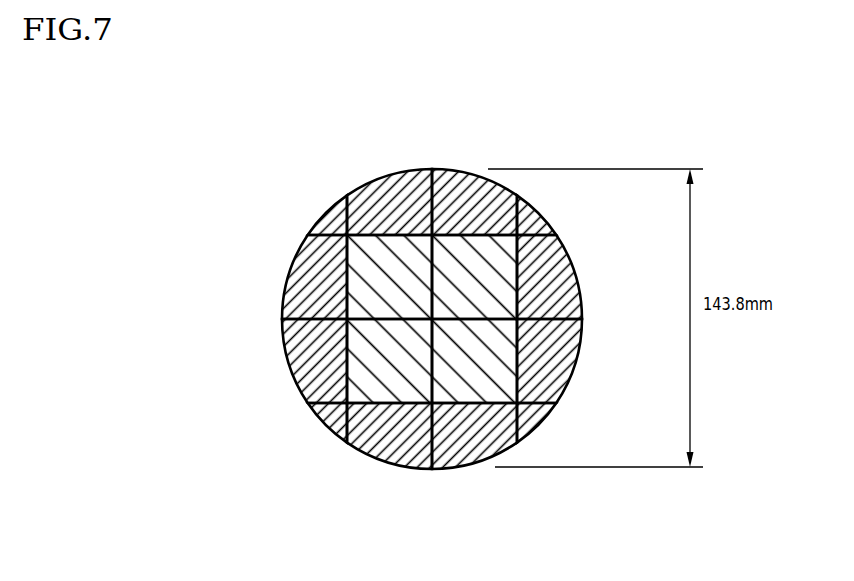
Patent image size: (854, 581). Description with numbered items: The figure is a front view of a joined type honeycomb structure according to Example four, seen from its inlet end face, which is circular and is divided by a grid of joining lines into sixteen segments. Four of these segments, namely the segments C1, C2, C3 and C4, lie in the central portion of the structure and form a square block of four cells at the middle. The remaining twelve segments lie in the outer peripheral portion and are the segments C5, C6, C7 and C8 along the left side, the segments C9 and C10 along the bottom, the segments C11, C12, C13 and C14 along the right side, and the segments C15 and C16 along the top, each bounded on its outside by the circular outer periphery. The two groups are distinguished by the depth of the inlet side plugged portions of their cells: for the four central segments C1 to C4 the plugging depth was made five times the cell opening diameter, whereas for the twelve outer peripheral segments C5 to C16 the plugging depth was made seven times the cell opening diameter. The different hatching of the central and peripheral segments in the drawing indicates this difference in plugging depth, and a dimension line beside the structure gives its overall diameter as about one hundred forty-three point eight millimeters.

The segment C1 is at (368, 257).
The segment C2 is at (448, 257).
The segment C3 is at (368, 380).
The segment C4 is at (455, 378).
The segment C5 is at (328, 218).
The segment C6 is at (298, 277).
The segment C7 is at (312, 358).
The segment C8 is at (319, 417).
The segment C9 is at (396, 450).
The segment C10 is at (476, 437).
The segment C11 is at (532, 415).
The segment C12 is at (557, 353).
The segment C13 is at (566, 268).
The segment C14 is at (535, 210).
The segment C15 is at (475, 200).
The segment C16 is at (406, 175).